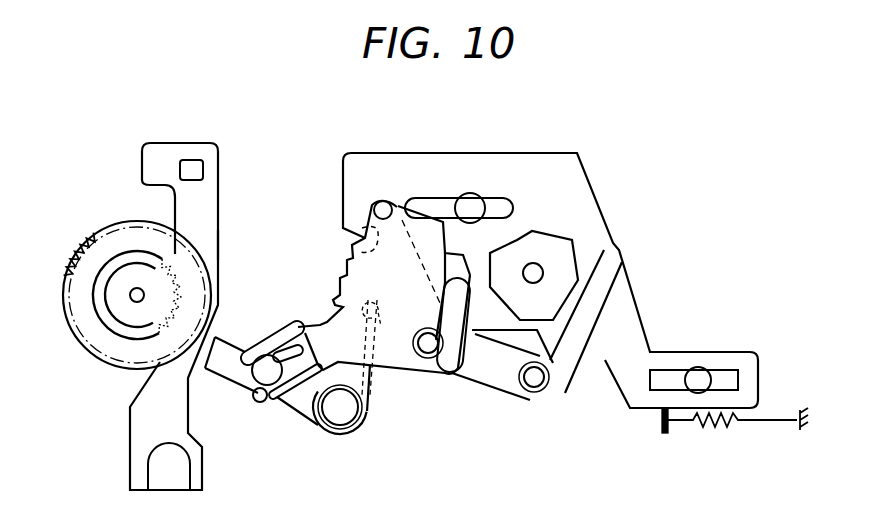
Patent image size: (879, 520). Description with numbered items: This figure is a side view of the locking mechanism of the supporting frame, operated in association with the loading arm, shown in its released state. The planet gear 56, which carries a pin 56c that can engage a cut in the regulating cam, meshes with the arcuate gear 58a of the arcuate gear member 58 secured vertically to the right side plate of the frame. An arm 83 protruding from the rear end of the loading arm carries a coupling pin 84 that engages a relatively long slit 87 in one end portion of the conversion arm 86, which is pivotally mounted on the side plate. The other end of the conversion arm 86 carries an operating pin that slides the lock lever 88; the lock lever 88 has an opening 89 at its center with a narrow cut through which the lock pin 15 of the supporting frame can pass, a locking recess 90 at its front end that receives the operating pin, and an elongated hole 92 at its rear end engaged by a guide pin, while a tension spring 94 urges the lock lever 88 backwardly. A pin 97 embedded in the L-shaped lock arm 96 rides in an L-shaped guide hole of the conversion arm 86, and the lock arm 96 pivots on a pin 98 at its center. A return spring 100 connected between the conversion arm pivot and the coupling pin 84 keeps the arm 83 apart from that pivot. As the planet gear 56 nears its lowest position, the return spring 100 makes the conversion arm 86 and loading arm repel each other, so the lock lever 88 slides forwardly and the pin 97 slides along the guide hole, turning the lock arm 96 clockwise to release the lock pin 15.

The lock pin 15 is at (579, 221).
The planet gear 56 is at (134, 316).
The pin of the planet gear 56c is at (87, 333).
The arcuate gear member 58 is at (183, 316).
The arcuate gear 58a is at (233, 234).
The arm 83 is at (238, 399).
The coupling pin 84 is at (283, 418).
The conversion arm 86 is at (355, 317).
The slit 87 is at (397, 163).
The lock lever 88 is at (550, 280).
The opening 89 is at (534, 213).
The locking recess 90 is at (340, 210).
The elongated hole 92 is at (727, 362).
The tension spring 94 is at (735, 444).
The lock arm 96 is at (586, 348).
The pin 97 is at (435, 384).
The pin 98 is at (512, 392).
The return spring 100 is at (367, 435).